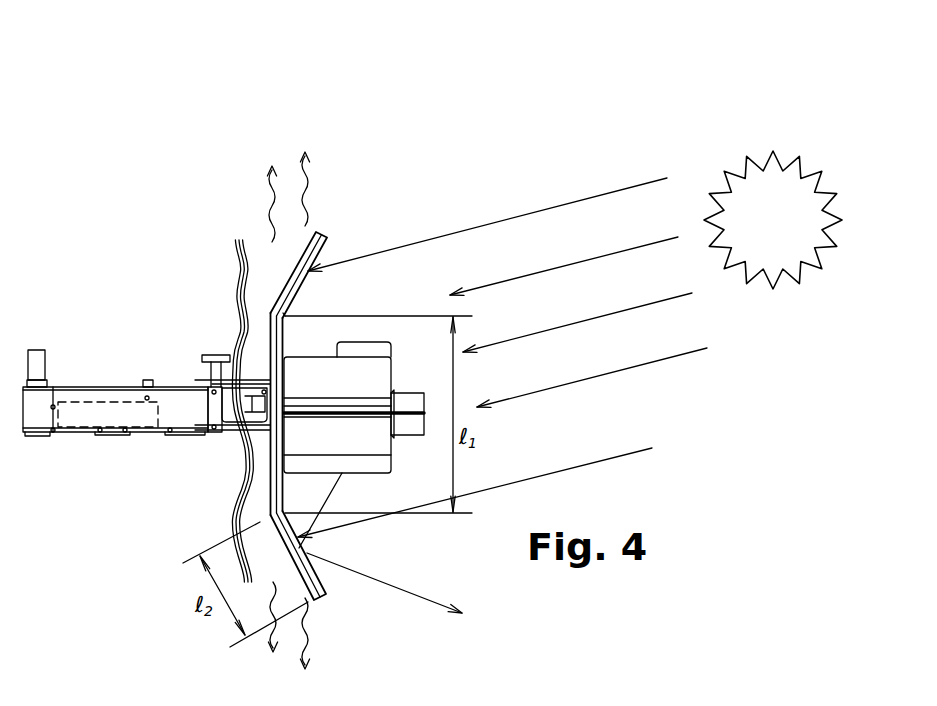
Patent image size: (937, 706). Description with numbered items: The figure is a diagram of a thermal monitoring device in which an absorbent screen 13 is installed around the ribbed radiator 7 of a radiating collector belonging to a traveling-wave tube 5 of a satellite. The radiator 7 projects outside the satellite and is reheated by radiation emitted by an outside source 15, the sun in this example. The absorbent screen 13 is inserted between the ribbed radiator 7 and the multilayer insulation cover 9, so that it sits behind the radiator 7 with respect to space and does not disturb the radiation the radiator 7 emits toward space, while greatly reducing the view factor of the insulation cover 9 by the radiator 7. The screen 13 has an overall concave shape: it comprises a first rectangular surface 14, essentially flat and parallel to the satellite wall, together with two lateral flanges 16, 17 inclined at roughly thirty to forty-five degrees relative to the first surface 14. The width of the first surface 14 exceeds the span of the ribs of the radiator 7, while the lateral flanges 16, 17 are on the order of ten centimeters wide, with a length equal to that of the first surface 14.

The traveling-wave tube 5 is at (87, 373).
The ribbed radiator 7 is at (387, 445).
The multilayer insulation cover 9 is at (240, 262).
The absorbent screen 13 is at (329, 230).
The first rectangular surface 14 is at (280, 463).
The outside source 15 is at (723, 148).
The lateral flange 16 is at (280, 300).
The lateral flange 17 is at (303, 572).